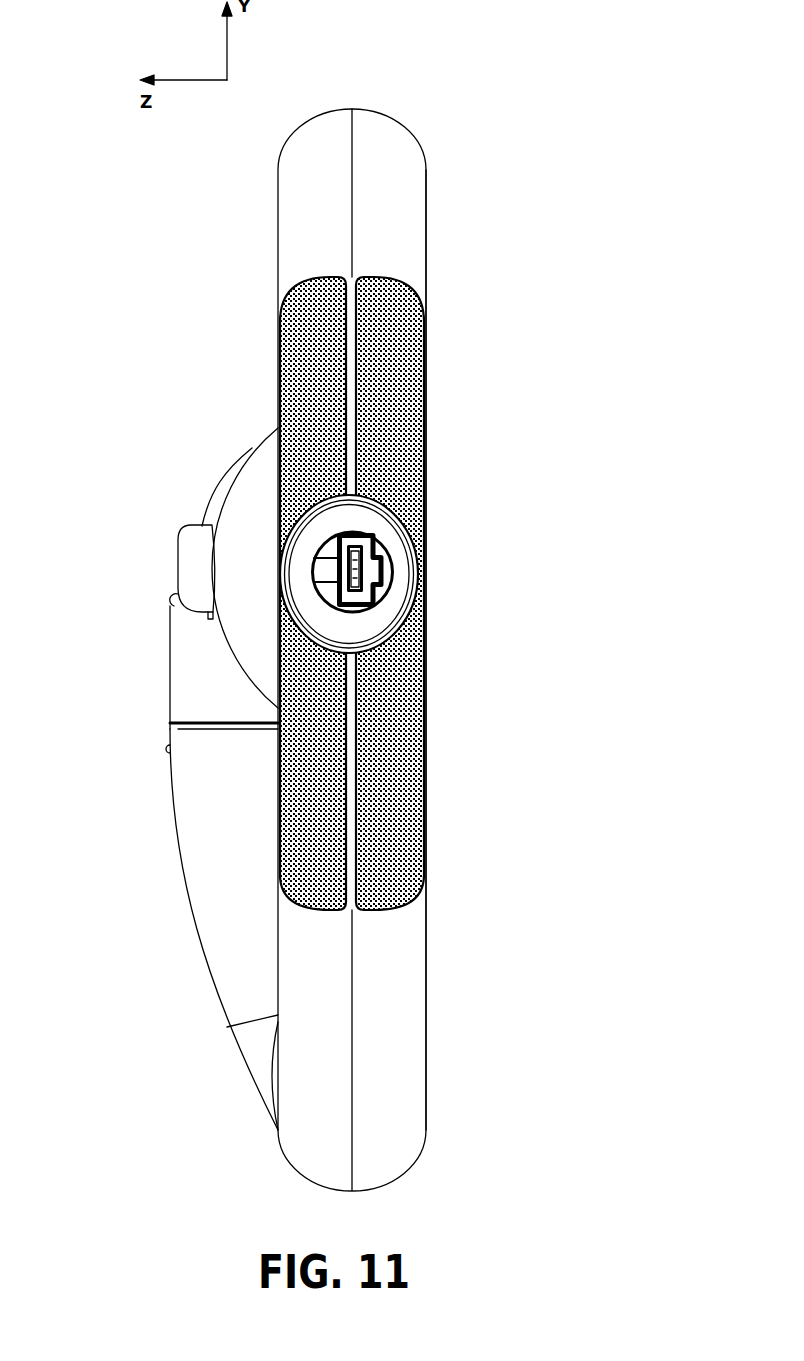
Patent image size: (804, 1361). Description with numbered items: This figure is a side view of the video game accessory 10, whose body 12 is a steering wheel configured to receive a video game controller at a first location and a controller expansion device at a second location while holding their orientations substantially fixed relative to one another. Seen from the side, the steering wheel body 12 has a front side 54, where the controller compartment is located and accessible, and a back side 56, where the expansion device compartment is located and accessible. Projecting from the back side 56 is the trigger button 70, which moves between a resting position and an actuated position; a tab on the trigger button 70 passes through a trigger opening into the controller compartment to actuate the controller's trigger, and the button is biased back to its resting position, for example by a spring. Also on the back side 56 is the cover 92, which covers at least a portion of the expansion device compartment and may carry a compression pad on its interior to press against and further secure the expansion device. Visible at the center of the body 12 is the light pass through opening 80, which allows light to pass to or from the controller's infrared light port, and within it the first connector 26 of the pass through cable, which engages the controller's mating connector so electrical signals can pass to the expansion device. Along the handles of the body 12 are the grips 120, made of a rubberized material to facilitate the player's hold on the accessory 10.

The video game accessory 10 is at (168, 173).
The body 12 is at (249, 426).
The grip 120 is at (395, 428).
The first connector 26 is at (365, 548).
The front side 54 is at (464, 567).
The light pass through opening 80 is at (393, 594).
The trigger button 70 is at (193, 573).
The back side 56 is at (160, 640).
The cover 92 is at (198, 823).